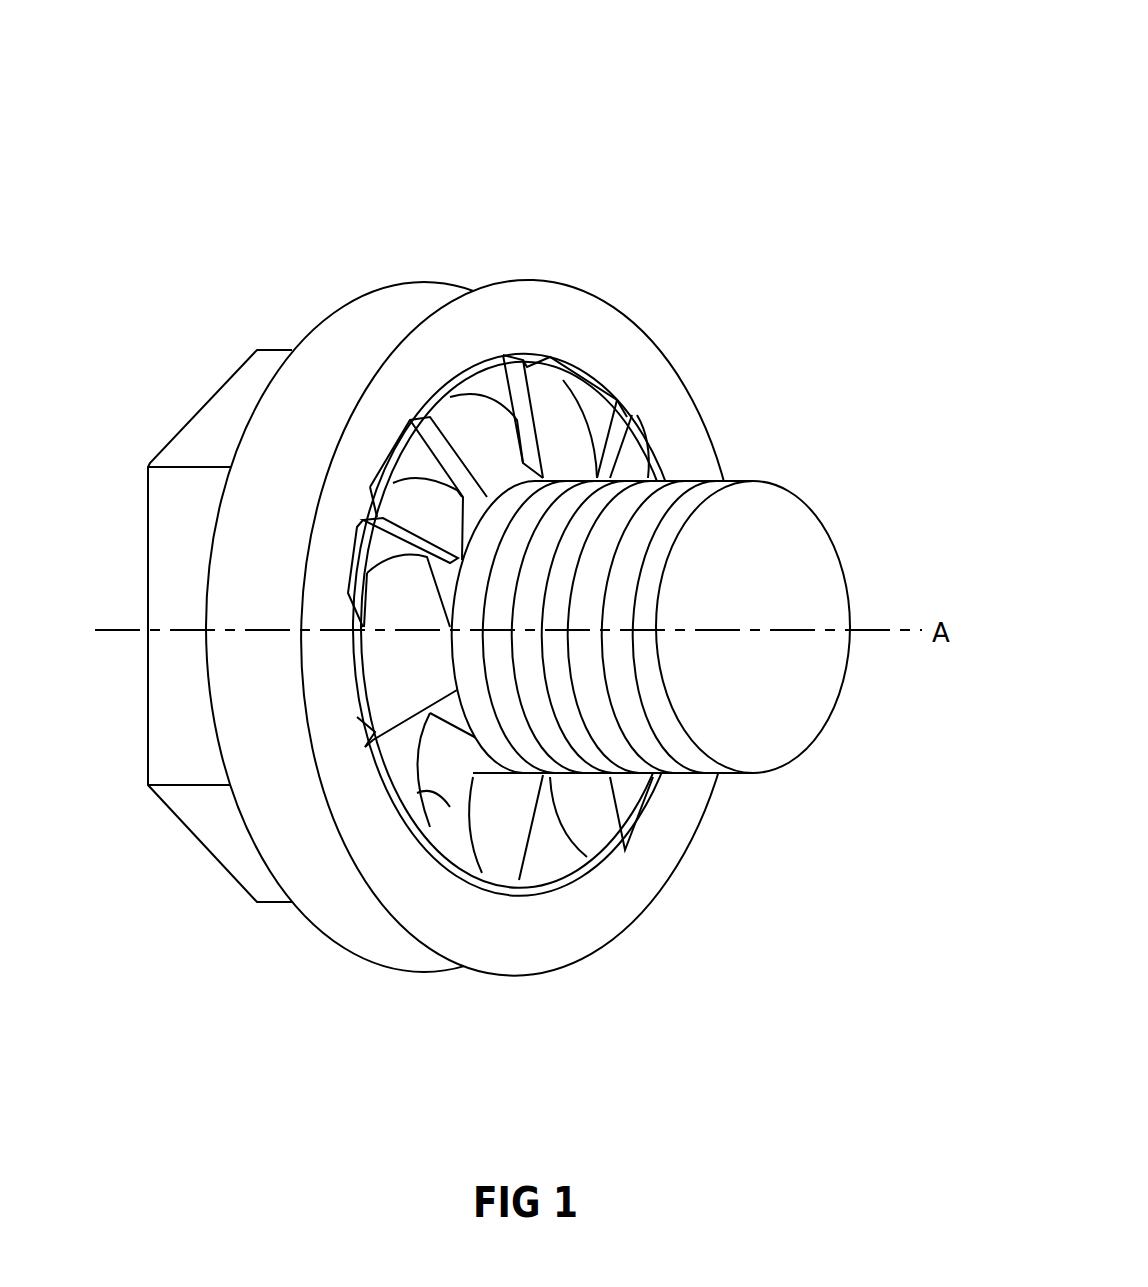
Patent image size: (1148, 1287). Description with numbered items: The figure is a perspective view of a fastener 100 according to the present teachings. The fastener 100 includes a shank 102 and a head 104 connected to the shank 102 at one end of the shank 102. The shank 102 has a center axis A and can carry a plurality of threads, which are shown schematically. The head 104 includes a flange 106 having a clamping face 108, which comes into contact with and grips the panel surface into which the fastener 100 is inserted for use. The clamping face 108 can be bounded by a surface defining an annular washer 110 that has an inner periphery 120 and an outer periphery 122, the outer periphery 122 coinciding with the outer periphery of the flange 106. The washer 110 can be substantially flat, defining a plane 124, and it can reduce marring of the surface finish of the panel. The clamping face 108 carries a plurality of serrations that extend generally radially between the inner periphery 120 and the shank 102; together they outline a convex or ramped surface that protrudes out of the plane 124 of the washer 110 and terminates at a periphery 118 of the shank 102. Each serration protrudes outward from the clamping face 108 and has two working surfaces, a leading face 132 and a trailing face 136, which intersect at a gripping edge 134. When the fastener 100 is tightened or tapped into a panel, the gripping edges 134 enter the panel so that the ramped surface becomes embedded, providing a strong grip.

The fastener 100 is at (712, 182).
The shank 102 is at (697, 762).
The head 104 is at (296, 952).
The flange 106 is at (407, 942).
The clamping face 108 is at (515, 867).
The annular washer 110 is at (613, 898).
The periphery of the shank 118 is at (554, 706).
The inner periphery 120 is at (387, 790).
The outer periphery 122 is at (685, 860).
The plane 124 is at (492, 942).
The leading face 132 is at (520, 390).
The gripping edge 134 is at (397, 537).
The trailing face 136 is at (417, 508).